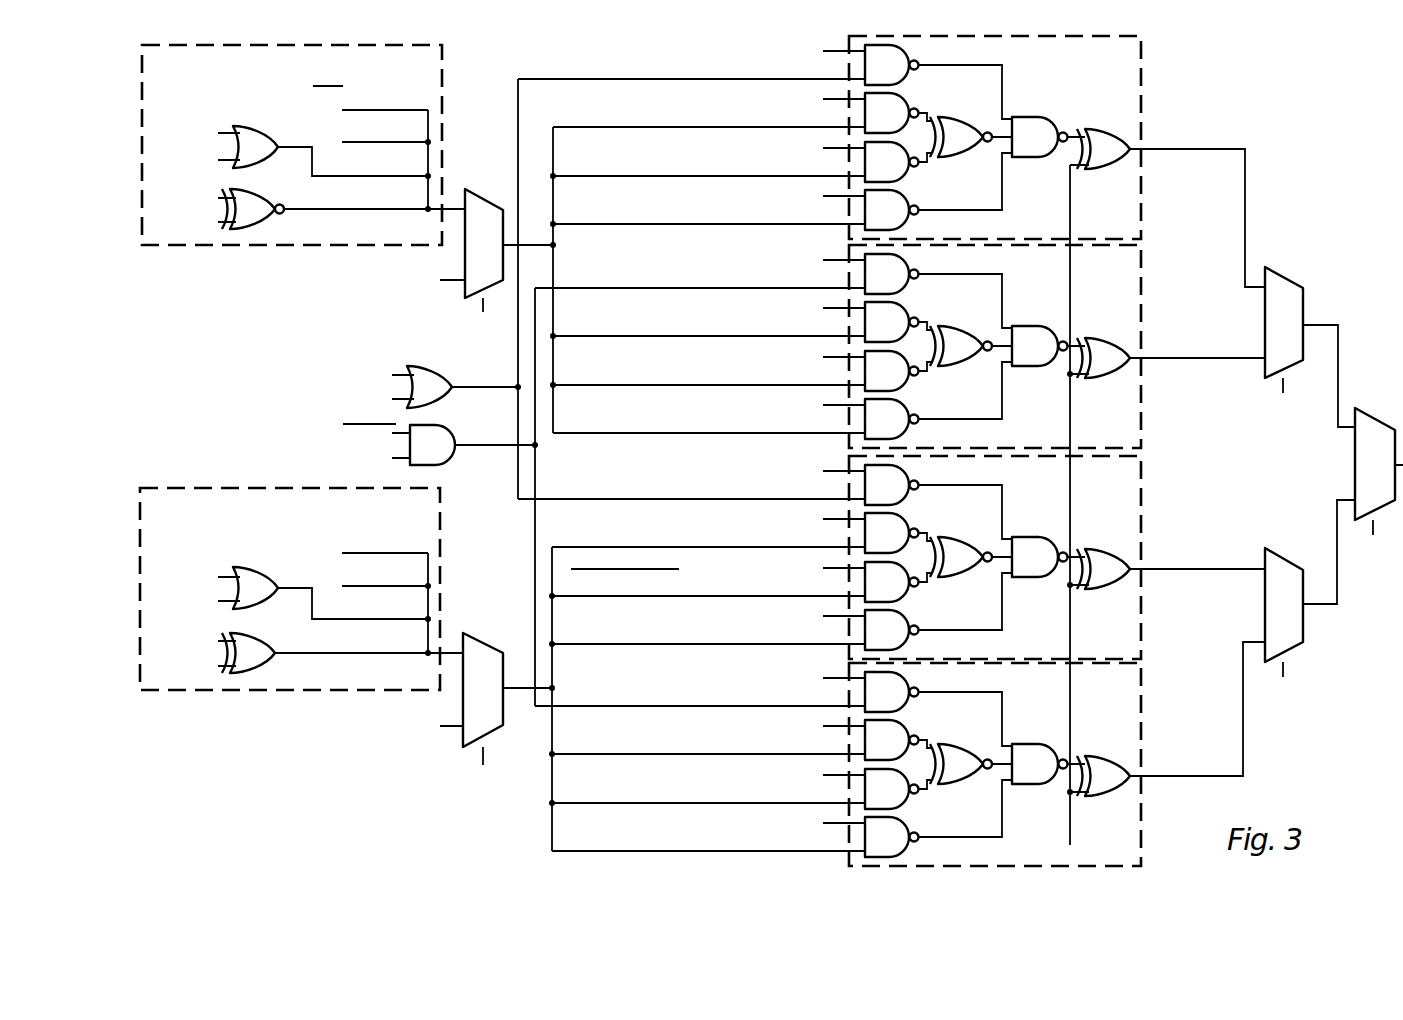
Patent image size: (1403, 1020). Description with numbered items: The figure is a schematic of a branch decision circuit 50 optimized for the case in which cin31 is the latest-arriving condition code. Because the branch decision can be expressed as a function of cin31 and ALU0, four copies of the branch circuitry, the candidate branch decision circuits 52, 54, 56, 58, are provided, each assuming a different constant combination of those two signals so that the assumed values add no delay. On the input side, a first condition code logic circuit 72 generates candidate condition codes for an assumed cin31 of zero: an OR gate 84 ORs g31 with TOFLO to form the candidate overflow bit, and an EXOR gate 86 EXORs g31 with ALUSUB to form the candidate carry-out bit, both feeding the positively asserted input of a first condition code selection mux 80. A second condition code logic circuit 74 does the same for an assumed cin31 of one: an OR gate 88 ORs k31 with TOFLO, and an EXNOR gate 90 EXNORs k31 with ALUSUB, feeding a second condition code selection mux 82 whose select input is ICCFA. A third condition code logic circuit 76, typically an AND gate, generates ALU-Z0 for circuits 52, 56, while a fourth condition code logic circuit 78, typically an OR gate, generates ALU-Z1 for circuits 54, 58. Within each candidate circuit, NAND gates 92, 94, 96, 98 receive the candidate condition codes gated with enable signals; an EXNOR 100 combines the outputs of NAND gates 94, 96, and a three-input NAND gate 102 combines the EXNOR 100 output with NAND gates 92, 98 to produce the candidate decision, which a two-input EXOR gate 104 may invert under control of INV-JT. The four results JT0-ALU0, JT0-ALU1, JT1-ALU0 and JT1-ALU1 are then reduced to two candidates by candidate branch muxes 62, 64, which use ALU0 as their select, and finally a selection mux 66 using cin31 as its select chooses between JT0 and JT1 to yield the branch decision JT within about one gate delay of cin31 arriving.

The branch decision circuit 50 is at (244, 400).
The first candidate branch decision circuit 52 is at (1125, 706).
The second candidate branch decision circuit 54 is at (1125, 499).
The third candidate branch decision circuit 56 is at (1125, 288).
The fourth candidate branch decision circuit 58 is at (1125, 79).
The candidate branch mux 62 is at (1298, 621).
The candidate branch mux 64 is at (1298, 339).
The selection mux 66 is at (1388, 479).
The first condition code logic circuit 72 is at (440, 530).
The second condition code logic circuit 74 is at (442, 88).
The third condition code logic circuit 76 is at (450, 462).
The fourth condition code logic circuit 78 is at (440, 380).
The first condition code selection mux 80 is at (499, 706).
The second condition code selection mux 82 is at (499, 262).
The OR gate 84 is at (257, 568).
The EXOR gate 86 is at (256, 641).
The OR gate 88 is at (257, 125).
The EXNOR gate 90 is at (256, 200).
The NAND gate 92 is at (897, 78).
The NAND gate 94 is at (897, 126).
The NAND gate 96 is at (897, 175).
The NAND gate 98 is at (897, 223).
The EXNOR 100 is at (958, 117).
The three-input NAND gate 102 is at (1033, 117).
The two-input EXOR gate 104 is at (1107, 169).